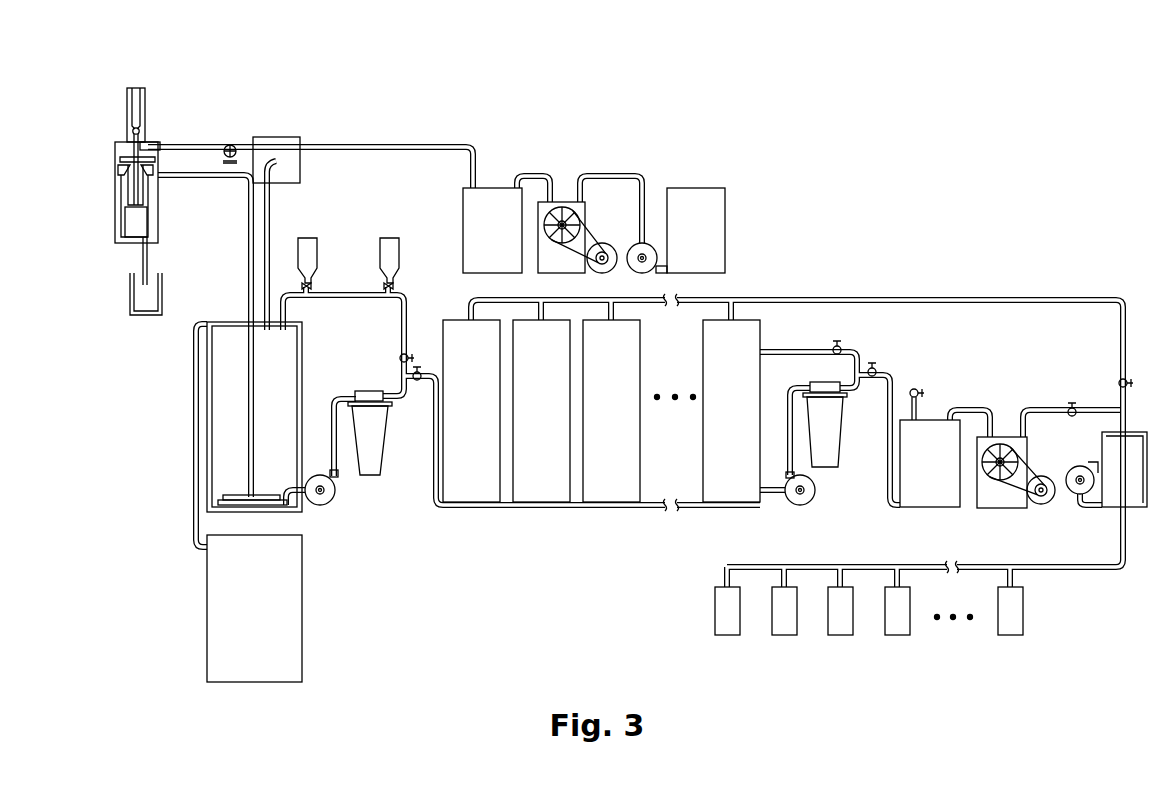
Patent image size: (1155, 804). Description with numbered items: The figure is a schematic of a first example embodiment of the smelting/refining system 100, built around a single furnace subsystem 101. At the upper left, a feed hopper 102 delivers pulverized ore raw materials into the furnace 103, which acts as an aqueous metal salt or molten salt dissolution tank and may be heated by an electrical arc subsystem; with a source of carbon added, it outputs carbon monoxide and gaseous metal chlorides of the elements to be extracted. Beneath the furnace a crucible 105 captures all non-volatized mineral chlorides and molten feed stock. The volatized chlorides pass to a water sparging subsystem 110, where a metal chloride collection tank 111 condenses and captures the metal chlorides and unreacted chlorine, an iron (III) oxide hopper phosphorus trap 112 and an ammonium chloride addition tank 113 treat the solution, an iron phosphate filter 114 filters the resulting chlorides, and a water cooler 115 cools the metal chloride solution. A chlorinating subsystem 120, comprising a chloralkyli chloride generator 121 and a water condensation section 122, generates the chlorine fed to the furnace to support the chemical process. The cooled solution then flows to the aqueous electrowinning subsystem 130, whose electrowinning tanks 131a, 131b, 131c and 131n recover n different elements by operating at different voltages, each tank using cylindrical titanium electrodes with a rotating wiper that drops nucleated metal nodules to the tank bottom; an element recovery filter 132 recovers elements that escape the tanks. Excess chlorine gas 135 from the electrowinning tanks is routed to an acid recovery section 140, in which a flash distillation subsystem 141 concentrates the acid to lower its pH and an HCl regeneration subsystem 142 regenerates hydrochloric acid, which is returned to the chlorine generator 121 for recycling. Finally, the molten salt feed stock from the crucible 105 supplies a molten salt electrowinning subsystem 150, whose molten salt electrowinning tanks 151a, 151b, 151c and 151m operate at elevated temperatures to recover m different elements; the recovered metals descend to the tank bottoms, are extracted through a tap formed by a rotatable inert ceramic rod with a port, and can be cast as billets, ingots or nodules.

The smelting/refining system 100 is at (1013, 51).
The sample introduction assembly 101 is at (105, 152).
The feed hopper 102 is at (147, 110).
The furnace 103 is at (112, 203).
The crucible 105 is at (130, 293).
The water sparging subsystem 110 is at (163, 500).
The metal chloride collection tank 111 is at (256, 382).
The iron (III) oxide hopper phosphorus trap 112 is at (308, 255).
The ammonium chloride addition tank 113 is at (390, 255).
The iron phosphate filter 114 is at (372, 460).
The water cooler 115 is at (277, 638).
The chlorinating subsystem 120 is at (597, 131).
The chloralkyli chloride generator 121 is at (473, 243).
The water condensation section 122 is at (587, 217).
The aqueous electrowinning subsystem 130 is at (548, 562).
The electrowinning tank 131a is at (493, 360).
The electrowinning tank 131b is at (563, 360).
The electrowinning tank 131c is at (633, 360).
The electrowinning tank 131n is at (753, 360).
The element recovery filter 132 is at (828, 450).
The excess chlorine gas 135 is at (790, 297).
The third processing unit 140 is at (1033, 352).
The flash distillation subsystem 141 is at (908, 476).
The HCl regeneration subsystem 142 is at (1103, 443).
The molten salt electrowinning subsystem 150 is at (940, 684).
The molten salt electrowinning tank 151a is at (725, 625).
The molten salt electrowinning tank 151b is at (782, 625).
The molten salt electrowinning tank 151c is at (838, 625).
The molten salt electrowinning tank 151m is at (1008, 625).